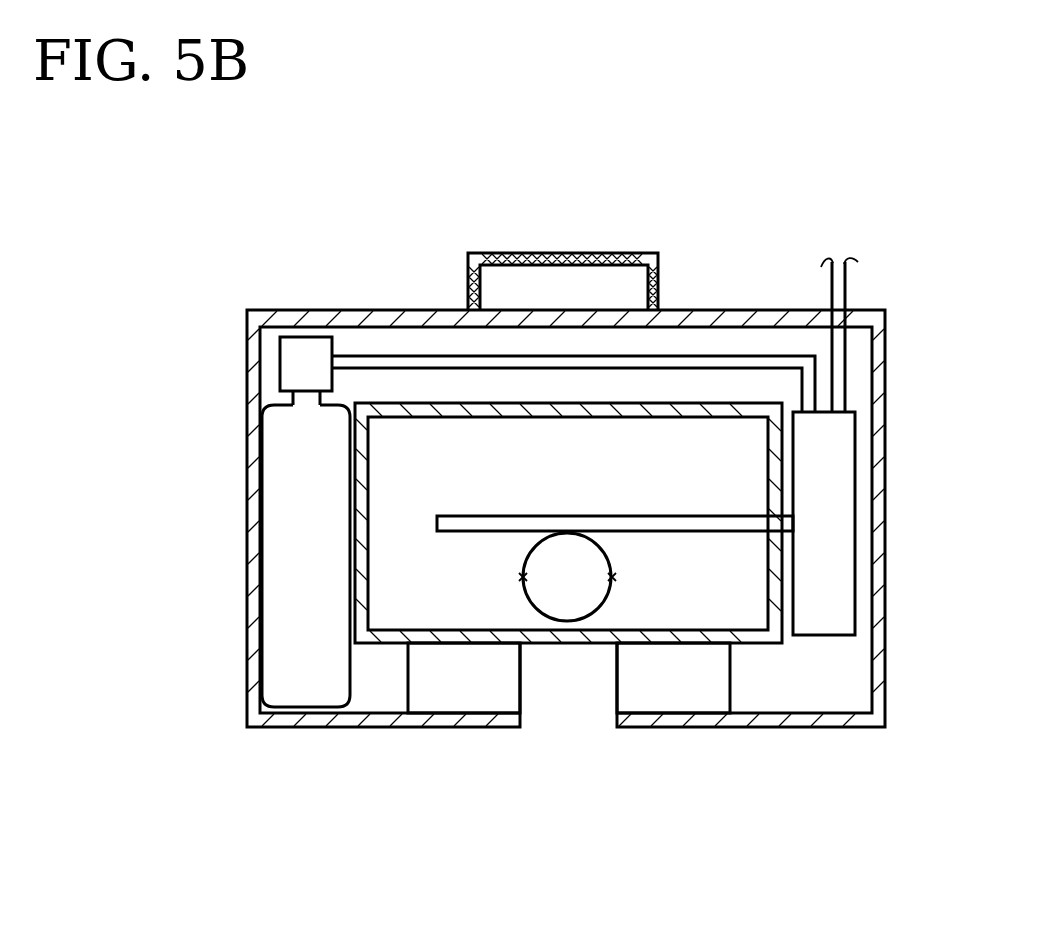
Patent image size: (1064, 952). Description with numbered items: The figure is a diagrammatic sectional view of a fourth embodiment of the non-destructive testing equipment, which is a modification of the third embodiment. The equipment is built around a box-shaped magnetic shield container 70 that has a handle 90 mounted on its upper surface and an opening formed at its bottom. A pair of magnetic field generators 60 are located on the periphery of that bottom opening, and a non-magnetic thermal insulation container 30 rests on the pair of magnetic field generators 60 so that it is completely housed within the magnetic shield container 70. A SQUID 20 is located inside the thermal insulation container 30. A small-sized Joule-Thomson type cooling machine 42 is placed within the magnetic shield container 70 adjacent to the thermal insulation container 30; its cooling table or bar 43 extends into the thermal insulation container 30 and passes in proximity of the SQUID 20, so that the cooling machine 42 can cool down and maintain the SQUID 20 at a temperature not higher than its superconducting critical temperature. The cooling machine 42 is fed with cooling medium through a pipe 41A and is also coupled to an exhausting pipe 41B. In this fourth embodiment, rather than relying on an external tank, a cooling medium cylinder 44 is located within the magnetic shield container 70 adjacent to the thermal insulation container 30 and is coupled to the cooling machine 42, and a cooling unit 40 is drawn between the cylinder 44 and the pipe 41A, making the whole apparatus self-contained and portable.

The SQUID 20 is at (566, 606).
The thermal insulation container 30 is at (487, 357).
The cooling unit 40 is at (272, 370).
The pipe 41A is at (476, 402).
The exhausting pipe 41B is at (848, 293).
The Joule-Thomson type cooling machine 42 is at (810, 491).
The cooling table or bar 43 is at (590, 514).
The cooling medium cylinder 44 is at (291, 489).
The magnetic field generator 60 is at (448, 702).
The magnetic shield container 70 is at (883, 510).
The handle 90 is at (658, 283).